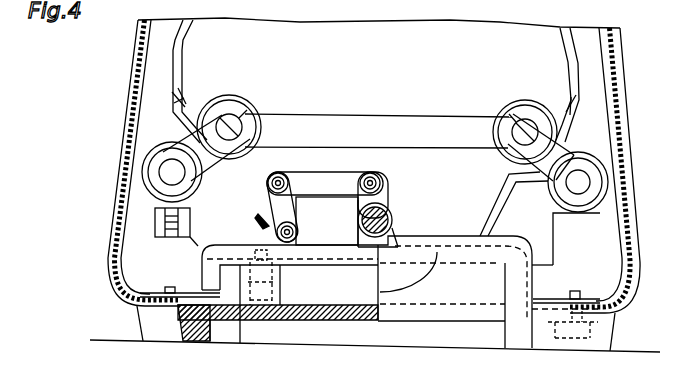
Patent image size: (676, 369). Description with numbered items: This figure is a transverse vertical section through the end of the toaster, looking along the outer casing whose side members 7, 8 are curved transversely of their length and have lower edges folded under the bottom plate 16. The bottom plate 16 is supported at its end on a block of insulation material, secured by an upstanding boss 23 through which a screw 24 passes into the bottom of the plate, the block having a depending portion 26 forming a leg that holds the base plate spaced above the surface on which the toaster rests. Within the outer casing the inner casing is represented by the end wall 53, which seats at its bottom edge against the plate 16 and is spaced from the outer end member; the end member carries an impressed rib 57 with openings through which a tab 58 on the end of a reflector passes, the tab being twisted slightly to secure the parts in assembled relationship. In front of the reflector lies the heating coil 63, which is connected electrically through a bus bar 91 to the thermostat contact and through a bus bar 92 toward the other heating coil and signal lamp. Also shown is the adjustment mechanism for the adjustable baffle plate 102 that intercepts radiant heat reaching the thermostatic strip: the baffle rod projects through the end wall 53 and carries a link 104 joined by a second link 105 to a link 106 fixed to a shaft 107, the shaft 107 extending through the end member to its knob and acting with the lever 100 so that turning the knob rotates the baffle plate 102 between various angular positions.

The side member 7 is at (609, 54).
The side member 8 is at (139, 59).
The bottom plate 16 is at (150, 293).
The upstanding boss 23 is at (274, 285).
The screw 24 is at (255, 320).
The depending portion 26 is at (193, 342).
The end wall 53 is at (379, 37).
The rib 57 is at (186, 30).
The tab 58 is at (184, 104).
The heating coil 63 is at (246, 97).
The bus bar 91 is at (155, 225).
The bus bar 92 is at (389, 125).
The lever 100 is at (401, 174).
The adjustable baffle plate 102 is at (258, 219).
The link 104 is at (311, 207).
The second link 105 is at (325, 183).
The link 106 is at (387, 201).
The shaft 107 is at (393, 219).